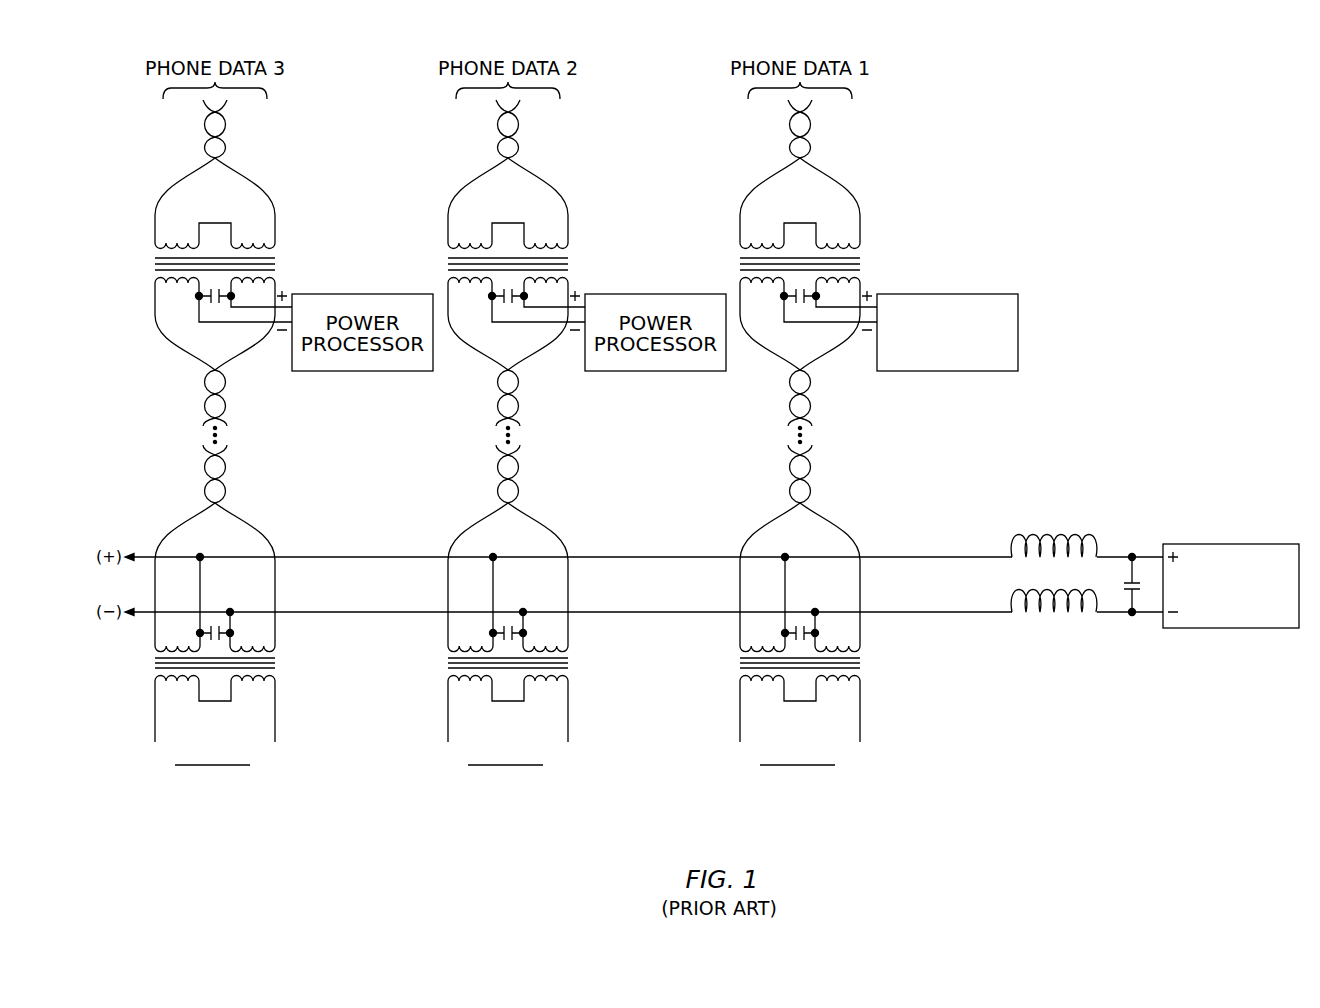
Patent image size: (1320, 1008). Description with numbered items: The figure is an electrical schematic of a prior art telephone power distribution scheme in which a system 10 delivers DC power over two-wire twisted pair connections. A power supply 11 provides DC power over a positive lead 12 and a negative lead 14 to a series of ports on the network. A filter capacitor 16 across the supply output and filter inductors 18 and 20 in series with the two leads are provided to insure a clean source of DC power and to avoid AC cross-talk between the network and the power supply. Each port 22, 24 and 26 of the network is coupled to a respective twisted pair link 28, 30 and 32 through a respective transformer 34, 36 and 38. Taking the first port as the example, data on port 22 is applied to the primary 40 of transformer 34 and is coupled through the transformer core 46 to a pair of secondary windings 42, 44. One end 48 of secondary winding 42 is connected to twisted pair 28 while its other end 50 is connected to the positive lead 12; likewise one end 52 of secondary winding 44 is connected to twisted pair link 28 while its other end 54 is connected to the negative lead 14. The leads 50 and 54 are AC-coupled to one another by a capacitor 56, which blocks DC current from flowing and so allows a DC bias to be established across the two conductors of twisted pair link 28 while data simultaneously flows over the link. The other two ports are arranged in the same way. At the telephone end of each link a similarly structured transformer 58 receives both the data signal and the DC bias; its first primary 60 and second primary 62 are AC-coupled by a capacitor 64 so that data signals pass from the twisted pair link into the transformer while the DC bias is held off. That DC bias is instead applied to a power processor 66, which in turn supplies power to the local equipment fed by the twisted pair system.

The system 10 is at (1170, 361).
The power supply 11 is at (1233, 543).
The positive lead 12 is at (950, 557).
The negative lead 14 is at (950, 615).
The filter capacitor 16 is at (1140, 587).
The filter inductor 18 is at (1047, 537).
The filter inductor 20 is at (1052, 615).
The port 22 is at (802, 667).
The port 24 is at (538, 667).
The port 26 is at (245, 667).
The twisted pair link 28 is at (828, 436).
The twisted pair link 30 is at (536, 436).
The twisted pair link 32 is at (243, 436).
The transformer 34 is at (830, 674).
The transformer 36 is at (538, 652).
The transformer 38 is at (245, 652).
The primary 40 is at (859, 709).
The secondary winding 42 is at (742, 633).
The secondary winding 44 is at (859, 633).
The transformer core 46 is at (742, 709).
The end 48 is at (749, 574).
The end 50 is at (773, 595).
The end 52 is at (851, 574).
The end 54 is at (834, 612).
The capacitor 56 is at (806, 605).
The transformer 58 is at (809, 264).
The first primary 60 is at (734, 274).
The second primary 62 is at (867, 274).
The capacitor 64 is at (796, 322).
The power processor 66 is at (969, 331).